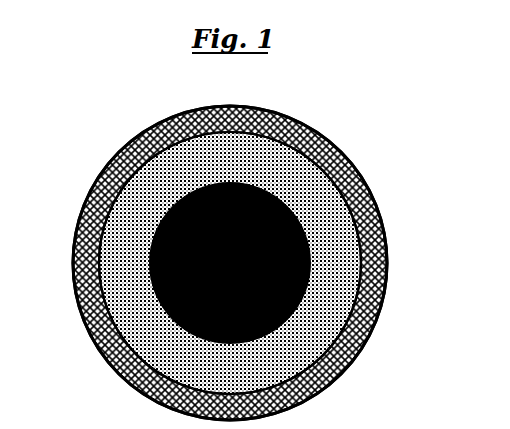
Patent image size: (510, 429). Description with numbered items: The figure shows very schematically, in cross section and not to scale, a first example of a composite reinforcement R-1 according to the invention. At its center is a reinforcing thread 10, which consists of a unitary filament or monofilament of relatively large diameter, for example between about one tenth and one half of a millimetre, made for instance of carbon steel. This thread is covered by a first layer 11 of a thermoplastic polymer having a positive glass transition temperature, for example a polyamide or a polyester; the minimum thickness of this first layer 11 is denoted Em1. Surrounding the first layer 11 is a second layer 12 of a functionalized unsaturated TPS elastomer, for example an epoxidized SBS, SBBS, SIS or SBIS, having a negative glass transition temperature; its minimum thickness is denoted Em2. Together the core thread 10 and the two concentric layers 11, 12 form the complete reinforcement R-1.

The composite reinforcement R-1 is at (327, 116).
The second layer 12 is at (118, 172).
The first layer 11 is at (138, 327).
The reinforcing thread 10 is at (235, 260).
The minimum thickness of the first layer Em1 is at (233, 139).
The minimum thickness of the second layer Em2 is at (295, 335).